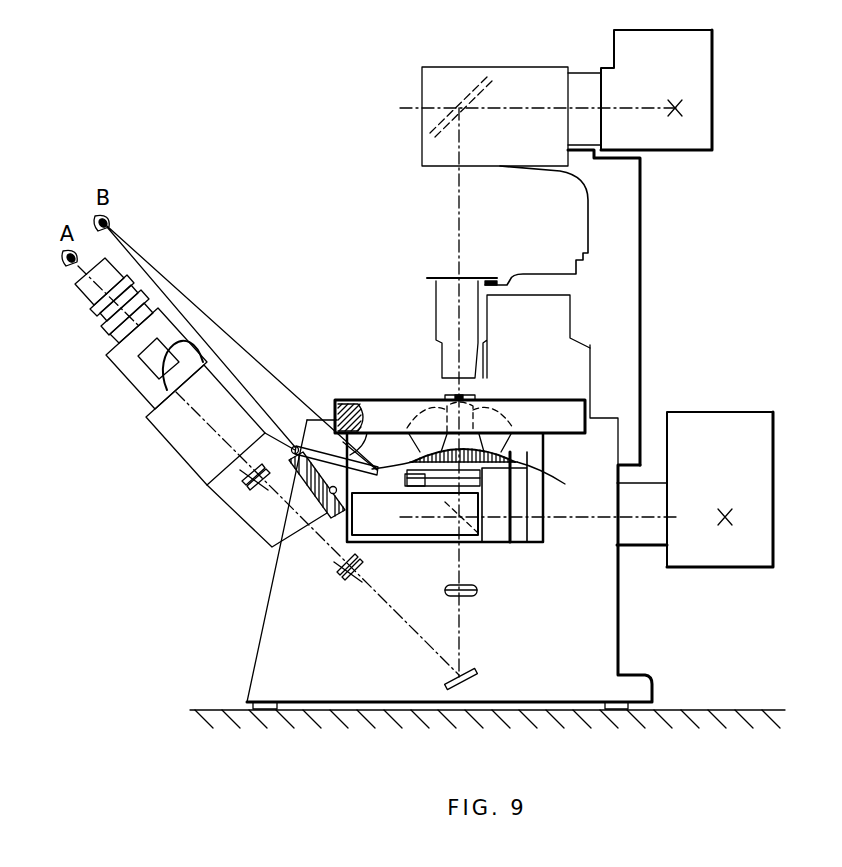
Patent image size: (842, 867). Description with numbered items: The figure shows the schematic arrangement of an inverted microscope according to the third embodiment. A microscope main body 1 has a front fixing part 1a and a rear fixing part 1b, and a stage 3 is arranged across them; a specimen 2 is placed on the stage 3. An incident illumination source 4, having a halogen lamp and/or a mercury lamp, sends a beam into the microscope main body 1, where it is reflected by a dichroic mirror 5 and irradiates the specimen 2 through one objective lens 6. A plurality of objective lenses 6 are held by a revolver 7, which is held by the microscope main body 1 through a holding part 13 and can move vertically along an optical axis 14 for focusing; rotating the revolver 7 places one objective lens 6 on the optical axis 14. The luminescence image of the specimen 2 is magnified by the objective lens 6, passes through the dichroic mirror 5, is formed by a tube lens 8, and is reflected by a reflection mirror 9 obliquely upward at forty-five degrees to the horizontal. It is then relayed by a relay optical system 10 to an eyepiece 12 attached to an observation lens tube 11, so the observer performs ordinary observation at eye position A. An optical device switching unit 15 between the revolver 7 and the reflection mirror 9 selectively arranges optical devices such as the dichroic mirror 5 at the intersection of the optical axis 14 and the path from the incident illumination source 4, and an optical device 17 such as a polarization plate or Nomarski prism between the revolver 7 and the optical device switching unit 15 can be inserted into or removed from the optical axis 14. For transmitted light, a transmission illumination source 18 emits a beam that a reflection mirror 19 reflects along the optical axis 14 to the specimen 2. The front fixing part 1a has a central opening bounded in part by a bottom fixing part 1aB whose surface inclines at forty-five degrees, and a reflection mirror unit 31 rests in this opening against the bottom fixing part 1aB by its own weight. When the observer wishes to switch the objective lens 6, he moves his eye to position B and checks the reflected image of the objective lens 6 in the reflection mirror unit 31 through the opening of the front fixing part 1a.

The microscope main body 1 is at (603, 645).
The front fixing part 1a is at (325, 437).
The bottom fixing part 1aB is at (272, 548).
The rear fixing part 1b is at (593, 445).
The specimen 2 is at (477, 395).
The stage 3 is at (553, 405).
The incident illumination source 4 is at (732, 428).
The dichroic mirror 5 is at (457, 522).
The objective lens 6 is at (434, 404).
The revolver 7 is at (527, 463).
The tube lens 8 is at (480, 590).
The reflection mirror 9 is at (477, 665).
The relay optical system 10 is at (243, 492).
The observation lens tube 11 is at (177, 432).
The eyepiece 12 is at (97, 305).
The holding part 13 is at (523, 525).
The optical axis 14 is at (460, 232).
The optical device switching unit 15 is at (392, 523).
The optical device 17 is at (415, 480).
The transmission illumination source 18 is at (712, 97).
The reflection mirror 19 is at (443, 108).
The reflection mirror unit 31 is at (370, 447).